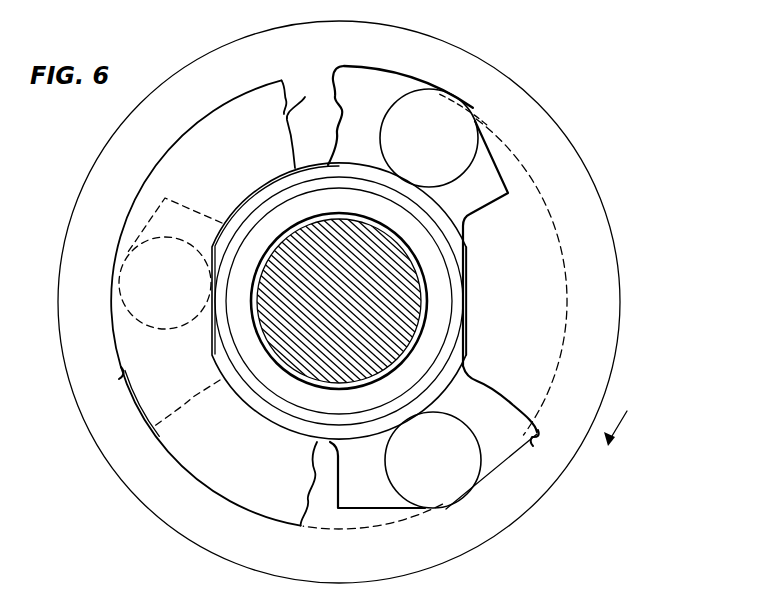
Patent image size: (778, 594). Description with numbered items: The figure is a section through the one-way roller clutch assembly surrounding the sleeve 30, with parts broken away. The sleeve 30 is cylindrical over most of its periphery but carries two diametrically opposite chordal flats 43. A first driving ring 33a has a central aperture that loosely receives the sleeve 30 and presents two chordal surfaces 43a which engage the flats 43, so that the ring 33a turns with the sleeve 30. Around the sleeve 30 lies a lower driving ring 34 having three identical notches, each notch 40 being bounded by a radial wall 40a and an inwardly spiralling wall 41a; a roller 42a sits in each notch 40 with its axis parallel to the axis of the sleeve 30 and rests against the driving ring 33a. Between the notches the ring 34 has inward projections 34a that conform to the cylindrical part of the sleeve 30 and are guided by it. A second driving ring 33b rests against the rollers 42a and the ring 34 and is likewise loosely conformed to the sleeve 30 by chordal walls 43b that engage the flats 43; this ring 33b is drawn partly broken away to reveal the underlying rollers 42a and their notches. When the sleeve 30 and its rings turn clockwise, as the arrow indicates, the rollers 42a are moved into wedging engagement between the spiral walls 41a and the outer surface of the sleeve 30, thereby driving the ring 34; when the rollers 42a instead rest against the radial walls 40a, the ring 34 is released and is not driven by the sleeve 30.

The sleeve 30 is at (440, 223).
The first driving ring 33a is at (492, 457).
The second driving ring 33b is at (210, 118).
The lower driving ring 34 is at (234, 30).
The inward projections 34a is at (305, 97).
The spider plate 40 is at (487, 208).
The radial walls 40a is at (348, 100).
The inwardly spiralling walls 41a is at (400, 78).
The rollers 42a is at (462, 117).
The chordal flats 43 is at (220, 350).
The chordal surfaces 43a is at (467, 280).
The chordal walls 43b is at (213, 343).